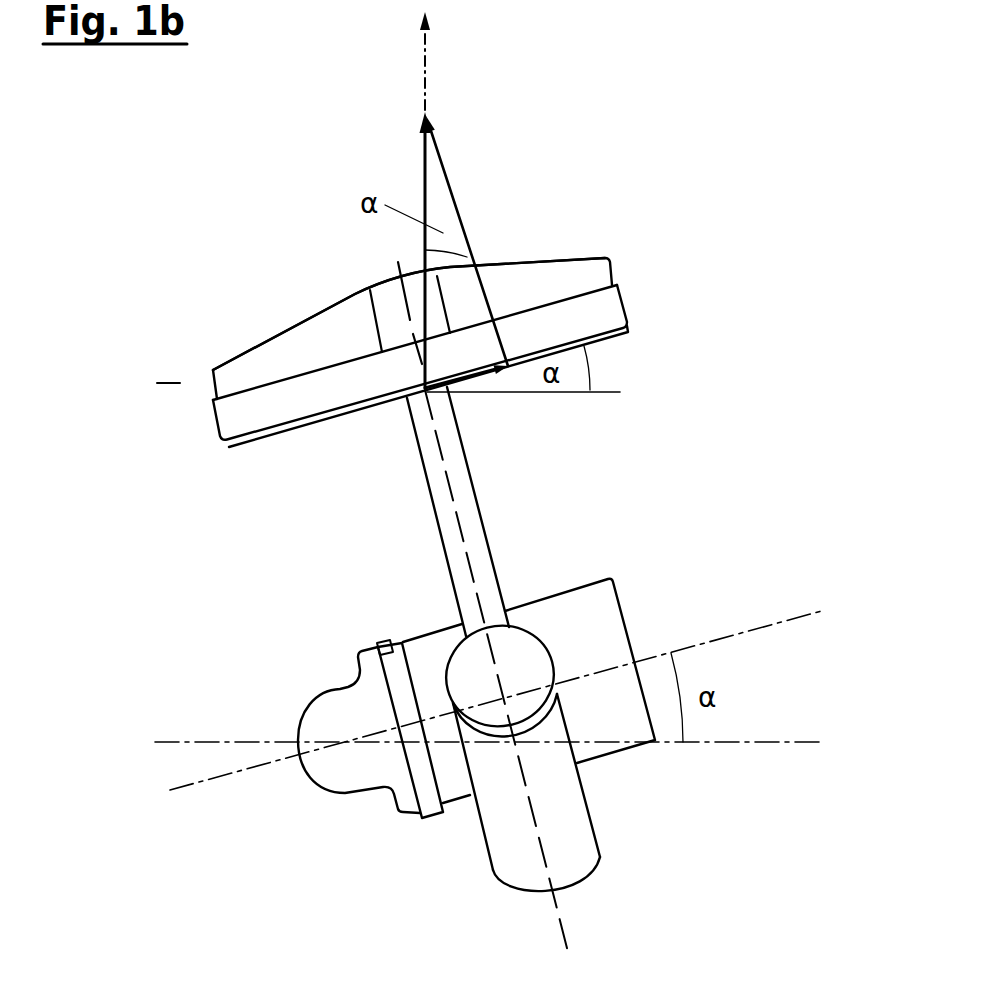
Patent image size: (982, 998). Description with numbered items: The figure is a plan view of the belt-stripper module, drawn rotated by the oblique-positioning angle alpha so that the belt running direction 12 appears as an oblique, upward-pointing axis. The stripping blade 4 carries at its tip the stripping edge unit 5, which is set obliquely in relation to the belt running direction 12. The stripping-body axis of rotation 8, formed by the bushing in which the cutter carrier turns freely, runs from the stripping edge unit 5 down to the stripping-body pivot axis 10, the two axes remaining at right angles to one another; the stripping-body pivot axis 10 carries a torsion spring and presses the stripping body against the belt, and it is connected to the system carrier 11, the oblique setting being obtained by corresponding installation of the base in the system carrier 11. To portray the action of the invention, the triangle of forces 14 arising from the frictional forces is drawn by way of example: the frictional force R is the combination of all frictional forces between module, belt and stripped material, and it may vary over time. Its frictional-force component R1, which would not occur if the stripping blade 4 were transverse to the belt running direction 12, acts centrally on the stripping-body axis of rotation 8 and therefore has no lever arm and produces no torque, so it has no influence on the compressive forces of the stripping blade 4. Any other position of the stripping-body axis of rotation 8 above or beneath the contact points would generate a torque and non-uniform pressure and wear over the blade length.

The stripping blade 4 is at (305, 325).
The stripping edge unit 5 is at (310, 420).
The stripping-body axis of rotation 8 is at (475, 575).
The stripping-body pivot axis 10 is at (525, 693).
The system carrier 11 is at (518, 745).
The belt running direction 12 is at (459, 61).
The triangle of forces 14 is at (465, 253).
The frictional force R is at (421, 188).
The frictional-force component R1 is at (483, 377).